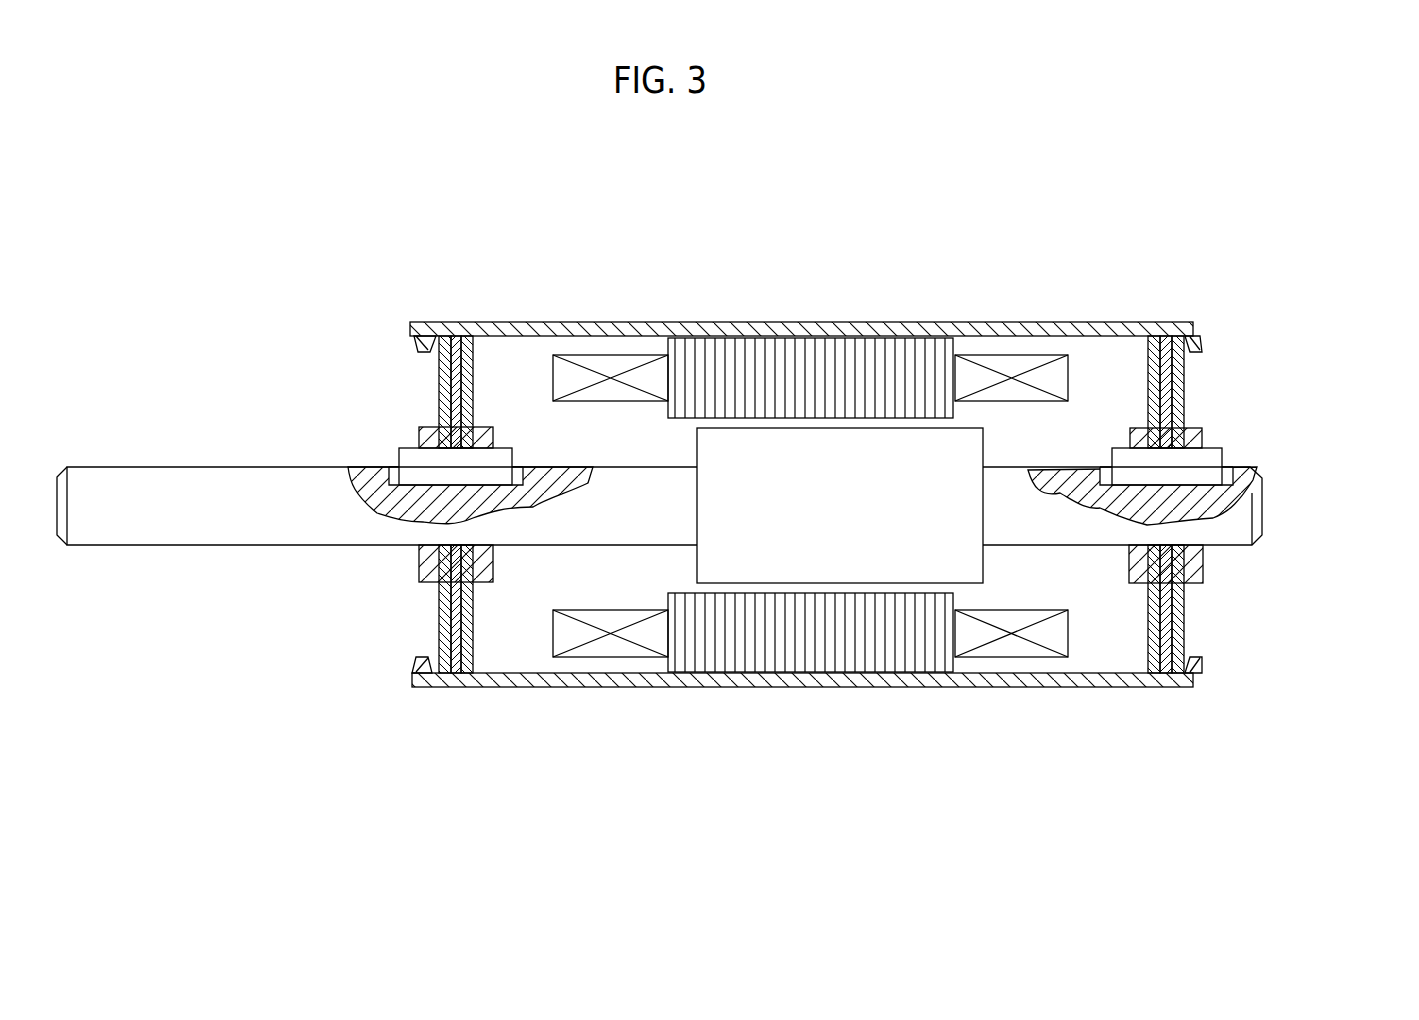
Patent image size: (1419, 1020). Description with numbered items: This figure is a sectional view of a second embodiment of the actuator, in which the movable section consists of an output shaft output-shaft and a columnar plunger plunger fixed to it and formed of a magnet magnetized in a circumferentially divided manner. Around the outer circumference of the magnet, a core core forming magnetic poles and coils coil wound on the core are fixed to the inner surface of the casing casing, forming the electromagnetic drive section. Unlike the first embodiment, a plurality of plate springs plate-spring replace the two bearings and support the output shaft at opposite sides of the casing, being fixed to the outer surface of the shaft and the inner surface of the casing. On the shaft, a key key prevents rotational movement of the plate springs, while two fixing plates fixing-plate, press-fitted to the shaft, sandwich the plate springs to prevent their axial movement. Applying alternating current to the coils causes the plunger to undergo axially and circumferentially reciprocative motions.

The element casing is at (490, 328).
The element core is at (750, 383).
The element coil is at (1015, 368).
The plate spring plate-spring is at (443, 397).
The element key is at (425, 463).
The output shaft output-shaft is at (155, 525).
The fixing plate fixing-plate is at (483, 573).
The element plunger is at (812, 555).